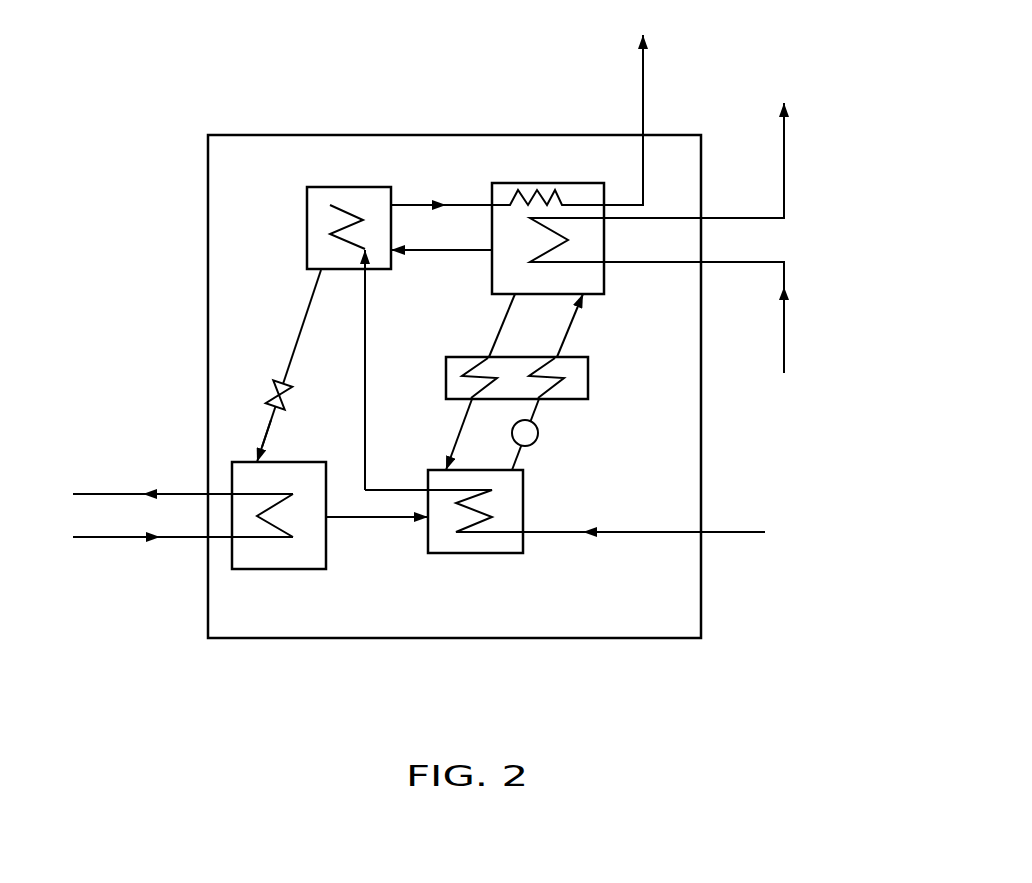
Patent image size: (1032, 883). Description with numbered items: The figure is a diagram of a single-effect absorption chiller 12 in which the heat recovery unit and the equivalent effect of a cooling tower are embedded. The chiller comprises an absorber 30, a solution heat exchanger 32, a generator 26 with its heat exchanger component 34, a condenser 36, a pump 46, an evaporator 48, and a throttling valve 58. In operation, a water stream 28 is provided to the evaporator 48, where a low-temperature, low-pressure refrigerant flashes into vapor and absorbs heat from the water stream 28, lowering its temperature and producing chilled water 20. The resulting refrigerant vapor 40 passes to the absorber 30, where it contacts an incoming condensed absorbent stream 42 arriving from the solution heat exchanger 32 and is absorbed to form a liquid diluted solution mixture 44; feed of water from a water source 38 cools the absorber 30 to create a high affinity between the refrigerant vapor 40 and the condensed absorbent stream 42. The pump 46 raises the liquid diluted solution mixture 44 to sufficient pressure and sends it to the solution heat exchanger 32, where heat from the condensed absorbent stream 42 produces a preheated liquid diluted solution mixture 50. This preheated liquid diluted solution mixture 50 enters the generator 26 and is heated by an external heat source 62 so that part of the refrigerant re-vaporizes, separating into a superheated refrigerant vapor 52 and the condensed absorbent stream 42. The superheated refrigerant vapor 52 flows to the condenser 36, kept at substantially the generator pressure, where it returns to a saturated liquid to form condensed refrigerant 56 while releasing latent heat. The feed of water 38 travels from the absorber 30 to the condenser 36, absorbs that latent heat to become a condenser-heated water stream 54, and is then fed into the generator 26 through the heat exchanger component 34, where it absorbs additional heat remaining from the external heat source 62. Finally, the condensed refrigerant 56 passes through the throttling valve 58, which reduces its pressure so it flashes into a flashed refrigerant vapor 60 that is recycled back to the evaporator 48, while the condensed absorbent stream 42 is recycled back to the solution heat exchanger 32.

The single-effect absorption chiller 12 is at (239, 133).
The chilled water 20 is at (104, 492).
The generator 26 is at (513, 180).
The water stream 28 is at (103, 538).
The absorber 30 is at (490, 554).
The solution heat exchanger 32 is at (598, 377).
The heat exchanger component 34 is at (568, 200).
The condenser 36 is at (325, 186).
The water source 38 is at (655, 534).
The refrigerant vapor 40 is at (373, 518).
The condensed absorbent stream 42 is at (499, 325).
The liquid diluted solution mixture 44 is at (518, 458).
The pump 46 is at (541, 434).
The evaporator 48 is at (273, 570).
The preheated liquid diluted solution mixture 50 is at (578, 328).
The superheated refrigerant vapor 52 is at (470, 247).
The condenser-heated water stream 54 is at (418, 202).
The condensed refrigerant 56 is at (299, 329).
The throttling valve 58 is at (268, 389).
The flashed refrigerant vapor 60 is at (258, 433).
The external heat source 62 is at (786, 337).